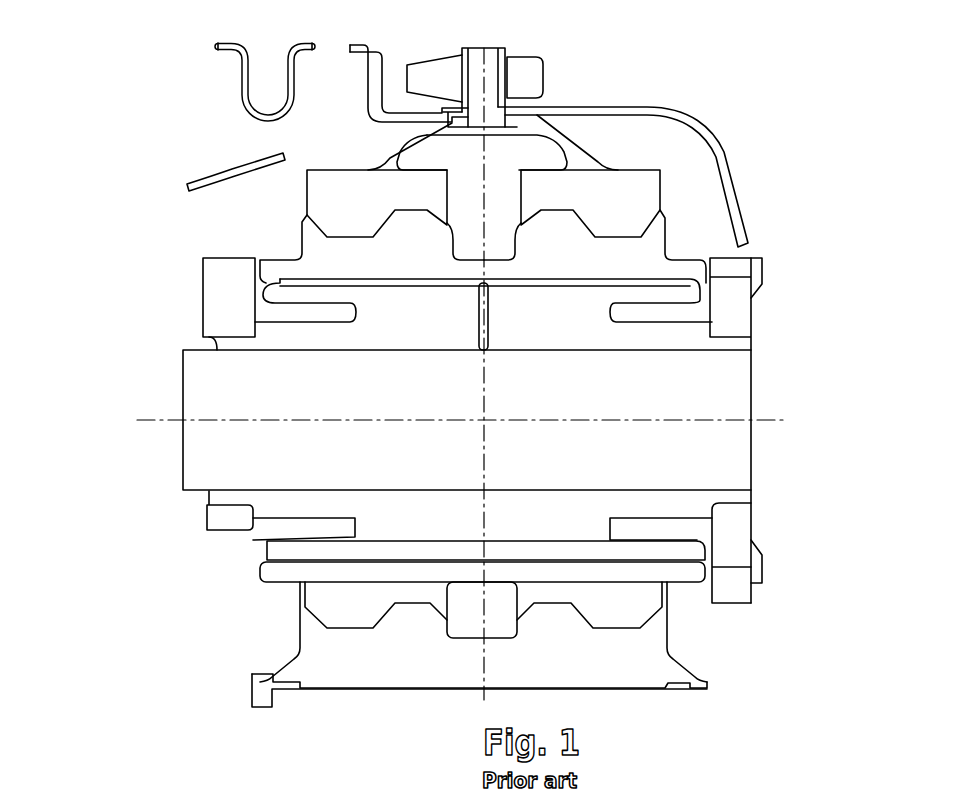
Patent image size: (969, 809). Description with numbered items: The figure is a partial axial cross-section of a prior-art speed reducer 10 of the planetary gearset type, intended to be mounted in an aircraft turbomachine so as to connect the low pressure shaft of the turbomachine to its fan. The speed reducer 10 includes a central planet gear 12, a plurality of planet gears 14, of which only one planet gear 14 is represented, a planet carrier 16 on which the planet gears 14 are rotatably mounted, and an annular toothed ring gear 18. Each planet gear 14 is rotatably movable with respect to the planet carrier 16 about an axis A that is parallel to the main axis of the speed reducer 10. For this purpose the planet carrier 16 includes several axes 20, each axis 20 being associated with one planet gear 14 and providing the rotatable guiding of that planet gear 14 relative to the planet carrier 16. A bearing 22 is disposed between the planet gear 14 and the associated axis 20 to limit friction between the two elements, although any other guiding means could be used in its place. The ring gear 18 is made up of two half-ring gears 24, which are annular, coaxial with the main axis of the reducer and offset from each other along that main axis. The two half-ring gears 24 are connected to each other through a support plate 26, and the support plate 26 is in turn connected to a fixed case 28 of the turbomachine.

The speed reducer 10 is at (130, 616).
The central planet gear 12 is at (260, 673).
The planet gear 14 is at (298, 597).
The planet carrier 16 is at (757, 306).
The annular toothed ring gear 18 is at (664, 189).
The axis 20 is at (296, 455).
The bearing 22 is at (301, 552).
The half-ring gear 24 is at (340, 198).
The support plate 26 is at (545, 124).
The fixed case 28 is at (384, 52).
The axis A is at (775, 422).